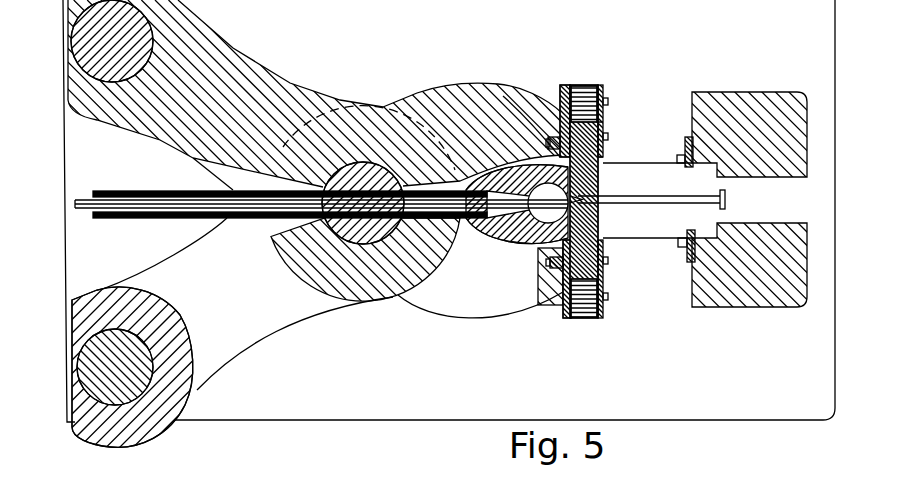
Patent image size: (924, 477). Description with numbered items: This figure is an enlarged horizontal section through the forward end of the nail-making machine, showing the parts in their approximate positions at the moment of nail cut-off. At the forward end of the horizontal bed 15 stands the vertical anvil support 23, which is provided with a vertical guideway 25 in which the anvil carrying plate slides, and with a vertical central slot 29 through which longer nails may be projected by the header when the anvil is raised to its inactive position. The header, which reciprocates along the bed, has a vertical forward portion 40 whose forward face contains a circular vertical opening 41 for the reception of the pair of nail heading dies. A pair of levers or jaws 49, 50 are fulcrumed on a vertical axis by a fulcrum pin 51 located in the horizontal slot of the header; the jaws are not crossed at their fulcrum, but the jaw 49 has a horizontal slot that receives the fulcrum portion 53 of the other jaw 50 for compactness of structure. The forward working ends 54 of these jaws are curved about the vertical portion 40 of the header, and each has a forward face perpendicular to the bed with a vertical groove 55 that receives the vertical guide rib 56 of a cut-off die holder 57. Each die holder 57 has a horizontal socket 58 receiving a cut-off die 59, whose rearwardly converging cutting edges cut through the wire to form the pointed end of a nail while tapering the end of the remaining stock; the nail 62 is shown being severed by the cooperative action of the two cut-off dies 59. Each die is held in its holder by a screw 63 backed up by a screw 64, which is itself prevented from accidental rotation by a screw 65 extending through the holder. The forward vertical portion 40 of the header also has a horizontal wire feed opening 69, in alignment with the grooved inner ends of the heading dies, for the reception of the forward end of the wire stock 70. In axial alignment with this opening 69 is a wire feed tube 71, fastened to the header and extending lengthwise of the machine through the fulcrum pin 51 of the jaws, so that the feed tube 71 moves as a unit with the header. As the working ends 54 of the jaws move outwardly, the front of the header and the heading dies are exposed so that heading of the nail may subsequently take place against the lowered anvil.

The horizontal bed 15 is at (365, 402).
The vertical anvil support 23 is at (745, 95).
The vertical guideway 25 is at (707, 240).
The vertical central slot 29 is at (767, 177).
The vertical forward portion 40 is at (510, 243).
The circular vertical opening 41 is at (530, 242).
The jaw 49 is at (272, 322).
The jaw 50 is at (260, 77).
The fulcrum pin 51 is at (368, 240).
The fulcrum portion 53 is at (412, 275).
The forward working ends 54 is at (522, 306).
The vertical groove 55 is at (560, 100).
The vertical guide rib 56 is at (505, 100).
The cut-off die holder 57 is at (605, 126).
The horizontal socket 58 is at (603, 153).
The cut-off die 59 is at (605, 130).
The nail 62 is at (629, 205).
The screw 63 is at (609, 260).
The screw 64 is at (584, 315).
The screw 65 is at (609, 296).
The horizontal wire feed opening 69 is at (481, 238).
The wire stock 70 is at (76, 200).
The wire feed tube 71 is at (180, 218).